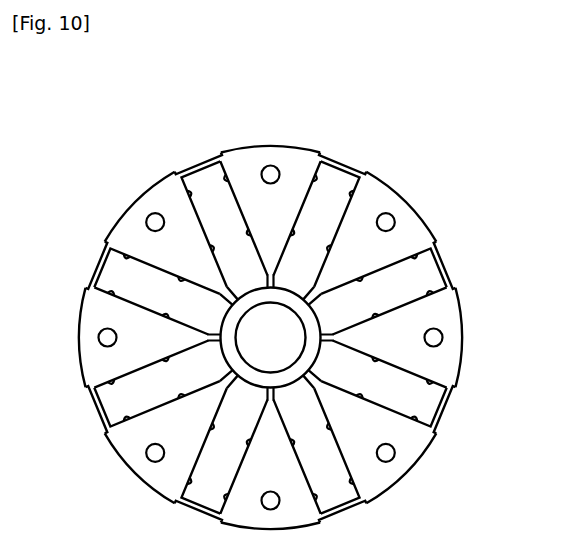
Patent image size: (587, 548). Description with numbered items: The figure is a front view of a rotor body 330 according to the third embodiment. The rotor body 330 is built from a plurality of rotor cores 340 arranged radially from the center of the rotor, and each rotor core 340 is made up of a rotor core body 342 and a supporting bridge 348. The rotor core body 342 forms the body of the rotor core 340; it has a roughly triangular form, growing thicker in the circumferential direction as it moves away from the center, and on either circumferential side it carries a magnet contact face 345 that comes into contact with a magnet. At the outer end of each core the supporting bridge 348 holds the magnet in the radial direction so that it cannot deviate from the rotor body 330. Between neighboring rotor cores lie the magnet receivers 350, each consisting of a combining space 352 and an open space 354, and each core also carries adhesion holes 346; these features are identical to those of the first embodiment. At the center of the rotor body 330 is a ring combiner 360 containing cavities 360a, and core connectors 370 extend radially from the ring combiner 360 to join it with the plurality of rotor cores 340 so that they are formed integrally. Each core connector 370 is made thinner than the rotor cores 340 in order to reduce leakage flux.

The rotor body 330 is at (161, 75).
The rotor core 340 is at (242, 142).
The rotor core body 342 is at (272, 153).
The magnet contact face 345 is at (198, 214).
The adhesion hole 346 is at (357, 188).
The supporting bridge 348 is at (343, 162).
The magnet receiver 350 is at (503, 283).
The combining space 352 is at (372, 298).
The open space 354 is at (323, 303).
The ring combiner 360 is at (242, 294).
The cavity 360a is at (257, 348).
The core connector 370 is at (230, 306).